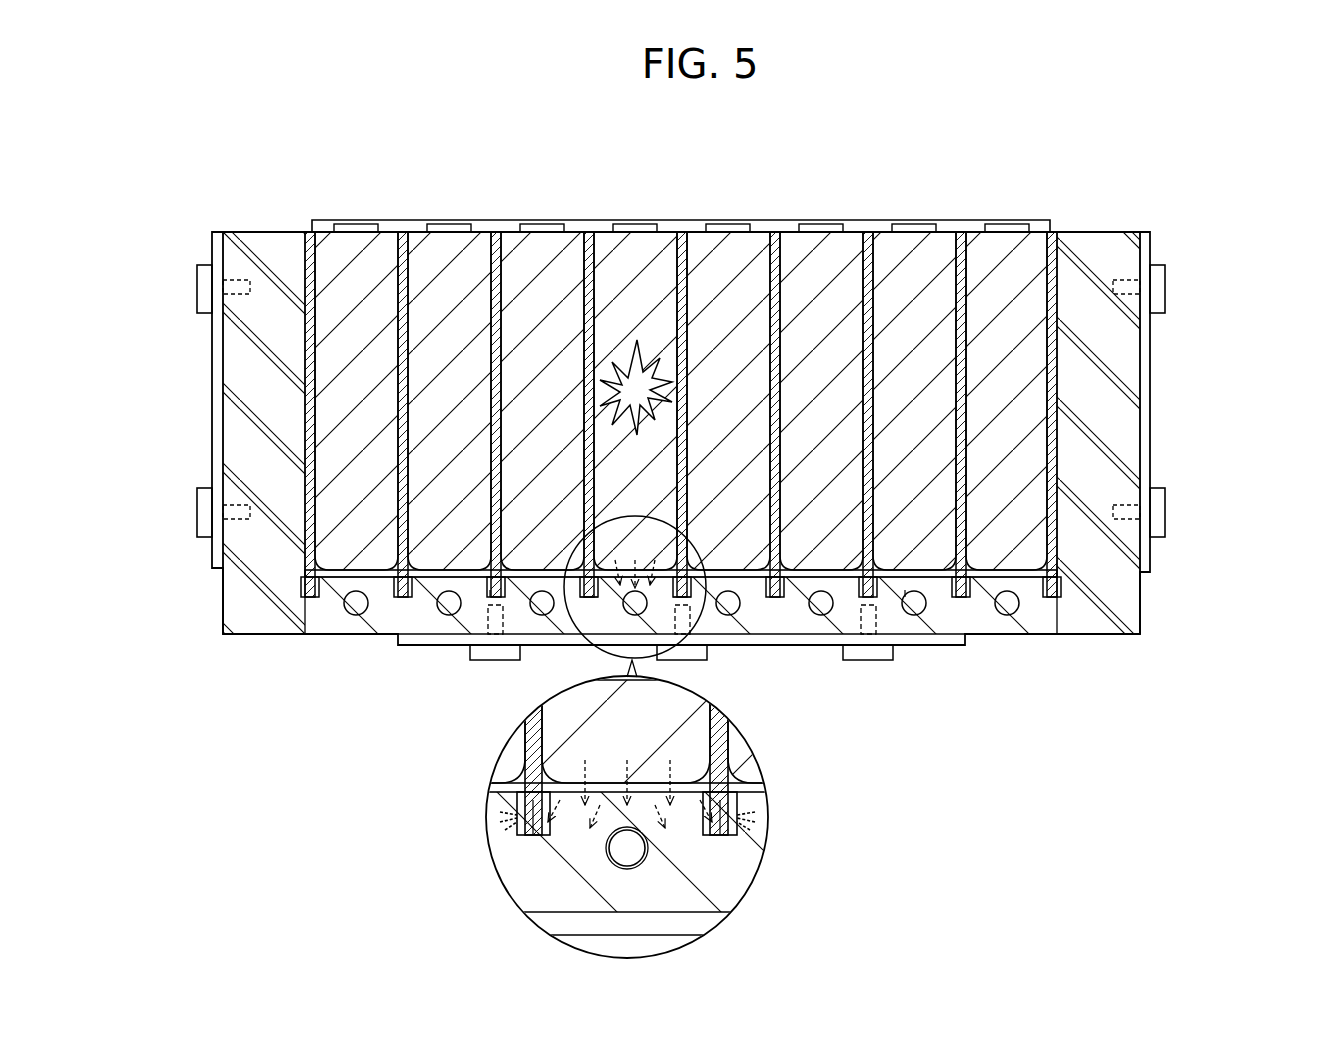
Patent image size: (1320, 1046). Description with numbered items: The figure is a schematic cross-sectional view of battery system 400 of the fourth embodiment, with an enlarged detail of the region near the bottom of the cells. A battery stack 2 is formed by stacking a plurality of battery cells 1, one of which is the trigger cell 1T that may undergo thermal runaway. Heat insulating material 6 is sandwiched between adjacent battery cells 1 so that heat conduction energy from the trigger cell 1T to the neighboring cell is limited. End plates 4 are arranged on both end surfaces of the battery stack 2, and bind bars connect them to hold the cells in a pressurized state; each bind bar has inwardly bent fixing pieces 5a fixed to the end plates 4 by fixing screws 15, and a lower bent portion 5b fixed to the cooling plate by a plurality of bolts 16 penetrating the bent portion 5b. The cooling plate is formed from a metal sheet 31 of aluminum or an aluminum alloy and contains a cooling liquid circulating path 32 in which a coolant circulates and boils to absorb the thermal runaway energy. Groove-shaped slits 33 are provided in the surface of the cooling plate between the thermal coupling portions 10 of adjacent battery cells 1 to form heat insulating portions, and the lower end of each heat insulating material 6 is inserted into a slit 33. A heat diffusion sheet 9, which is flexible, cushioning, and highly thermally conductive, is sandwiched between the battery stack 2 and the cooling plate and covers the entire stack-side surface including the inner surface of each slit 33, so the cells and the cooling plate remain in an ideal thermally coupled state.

The battery system 400 is at (1172, 183).
The battery stack 2 is at (338, 152).
The battery cell 1 is at (355, 250).
The trigger cell 1T is at (638, 250).
The heat insulating material 6 is at (570, 320).
The end plate 4 is at (290, 250).
The fixing screw 15 is at (197, 290).
The fixing piece 5a is at (215, 372).
The bent portion 5b is at (920, 645).
The thermal coupling portion 10 is at (540, 562).
The heat diffusion sheet 9 is at (490, 590).
The circulating path 32 is at (340, 605).
The bolt 16 is at (495, 660).
The metal sheet 31 is at (950, 632).
The groove-shaped slit 33 is at (515, 822).